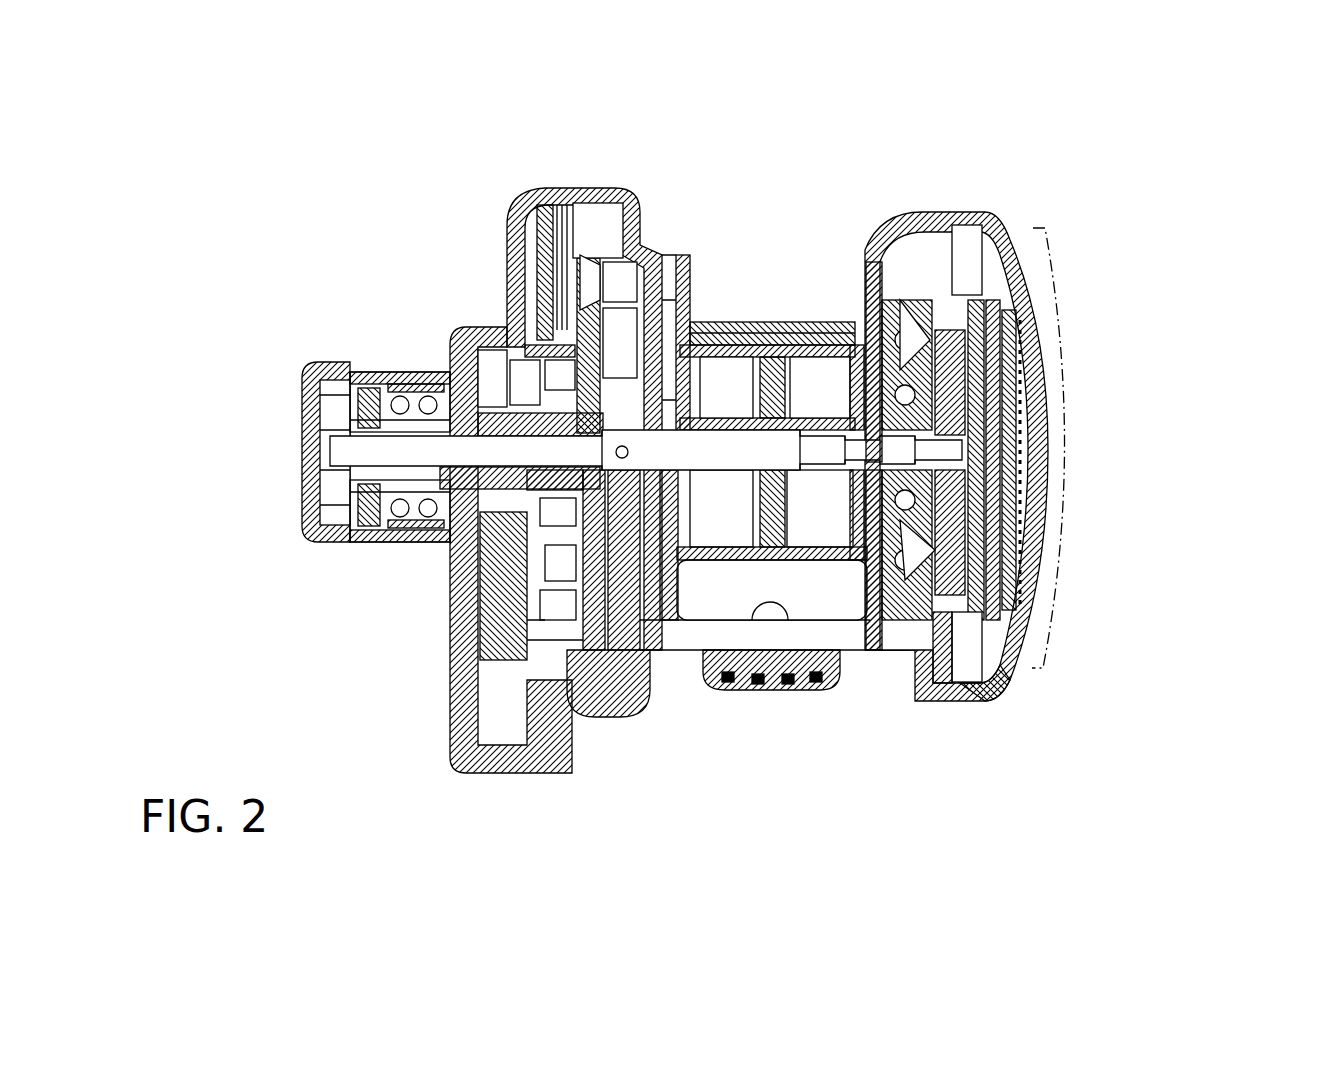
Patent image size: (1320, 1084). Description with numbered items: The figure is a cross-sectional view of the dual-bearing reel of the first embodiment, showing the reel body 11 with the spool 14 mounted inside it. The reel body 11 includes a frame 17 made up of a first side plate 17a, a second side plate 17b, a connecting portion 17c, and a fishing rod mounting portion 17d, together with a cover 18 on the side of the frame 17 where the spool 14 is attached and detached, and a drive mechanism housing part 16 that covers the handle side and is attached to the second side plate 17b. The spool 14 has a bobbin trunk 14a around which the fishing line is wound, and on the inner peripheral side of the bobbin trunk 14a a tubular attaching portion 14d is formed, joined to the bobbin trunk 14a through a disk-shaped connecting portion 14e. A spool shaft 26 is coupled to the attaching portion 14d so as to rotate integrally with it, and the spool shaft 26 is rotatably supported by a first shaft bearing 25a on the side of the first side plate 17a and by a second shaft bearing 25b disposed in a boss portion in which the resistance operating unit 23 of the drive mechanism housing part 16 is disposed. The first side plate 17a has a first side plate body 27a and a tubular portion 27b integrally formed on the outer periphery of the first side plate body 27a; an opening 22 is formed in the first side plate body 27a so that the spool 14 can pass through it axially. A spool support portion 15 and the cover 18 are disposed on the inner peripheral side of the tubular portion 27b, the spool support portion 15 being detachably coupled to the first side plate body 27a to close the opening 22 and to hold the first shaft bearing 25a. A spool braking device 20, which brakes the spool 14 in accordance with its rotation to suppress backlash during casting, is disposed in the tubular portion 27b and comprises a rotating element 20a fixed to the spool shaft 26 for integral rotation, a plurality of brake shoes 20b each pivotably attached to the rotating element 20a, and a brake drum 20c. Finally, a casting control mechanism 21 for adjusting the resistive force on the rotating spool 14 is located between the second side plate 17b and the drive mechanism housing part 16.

The reel body 11 is at (577, 162).
The spool 14 is at (800, 325).
The bobbin trunk 14a is at (728, 347).
The attaching portion 14d is at (676, 322).
The connecting portion 14e is at (763, 325).
The spool support portion 15 is at (970, 412).
The drive mechanism housing part 16 is at (503, 805).
The frame 17 is at (640, 742).
The first side plate 17a is at (938, 712).
The second side plate 17b is at (613, 723).
The connecting portion 17c is at (673, 643).
The fishing rod mounting portion 17d is at (745, 673).
The cover 18 is at (1082, 591).
The spool braking device 20 is at (1191, 416).
The rotating element 20a is at (985, 478).
The brake shoes 20b is at (1010, 575).
The brake drum 20c is at (1010, 525).
The casting control mechanism 21 is at (520, 265).
The opening 22 is at (1013, 683).
The resistance operating unit 23 is at (312, 550).
The first shaft bearing 25a is at (866, 320).
The second shaft bearing 25b is at (372, 370).
The spool shaft 26 is at (823, 420).
The first side plate body 27a is at (892, 657).
The tubular portion 27b is at (1008, 686).